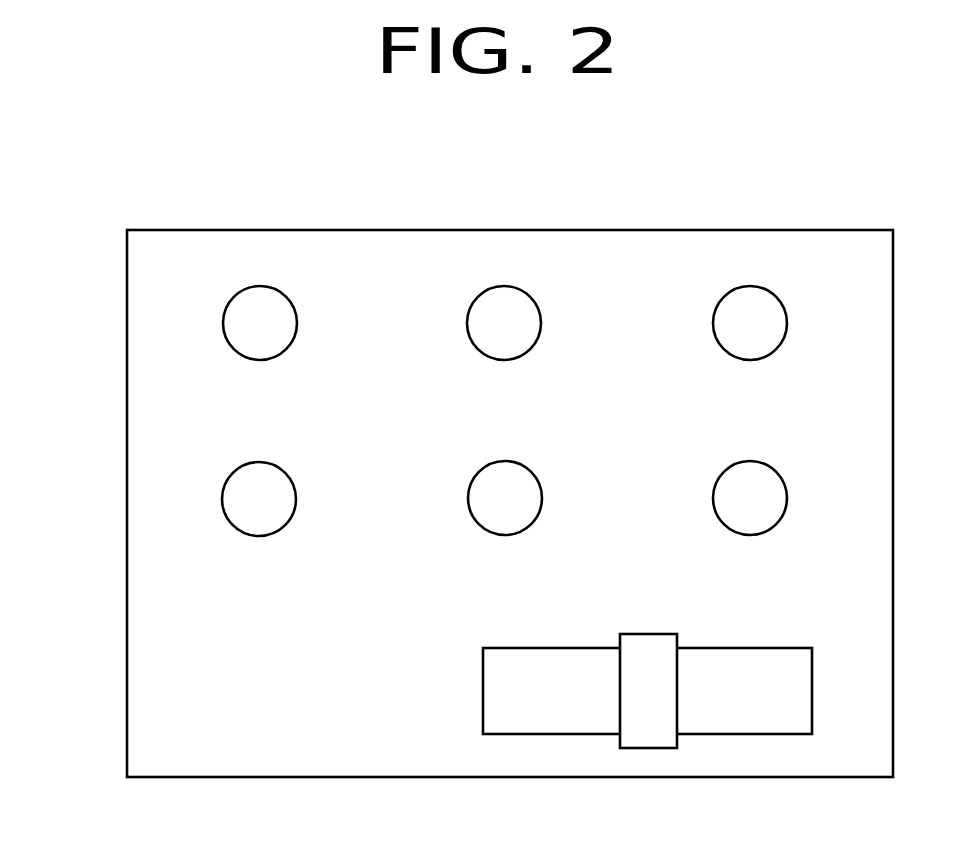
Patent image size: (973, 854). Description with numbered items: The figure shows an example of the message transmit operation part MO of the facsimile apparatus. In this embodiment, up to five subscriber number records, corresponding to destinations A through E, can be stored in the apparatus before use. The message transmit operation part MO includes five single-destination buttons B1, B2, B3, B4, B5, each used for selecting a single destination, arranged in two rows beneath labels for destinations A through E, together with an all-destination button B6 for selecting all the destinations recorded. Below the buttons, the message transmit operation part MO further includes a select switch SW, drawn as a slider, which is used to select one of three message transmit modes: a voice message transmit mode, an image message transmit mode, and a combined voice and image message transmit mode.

The message transmit operation part MO is at (746, 229).
The single-destination button B1 is at (222, 320).
The single-destination button B2 is at (467, 319).
The single-destination button B3 is at (787, 320).
The single-destination button B4 is at (222, 495).
The single-destination button B5 is at (468, 494).
The all-destination button B6 is at (787, 497).
The select switch SW is at (641, 749).